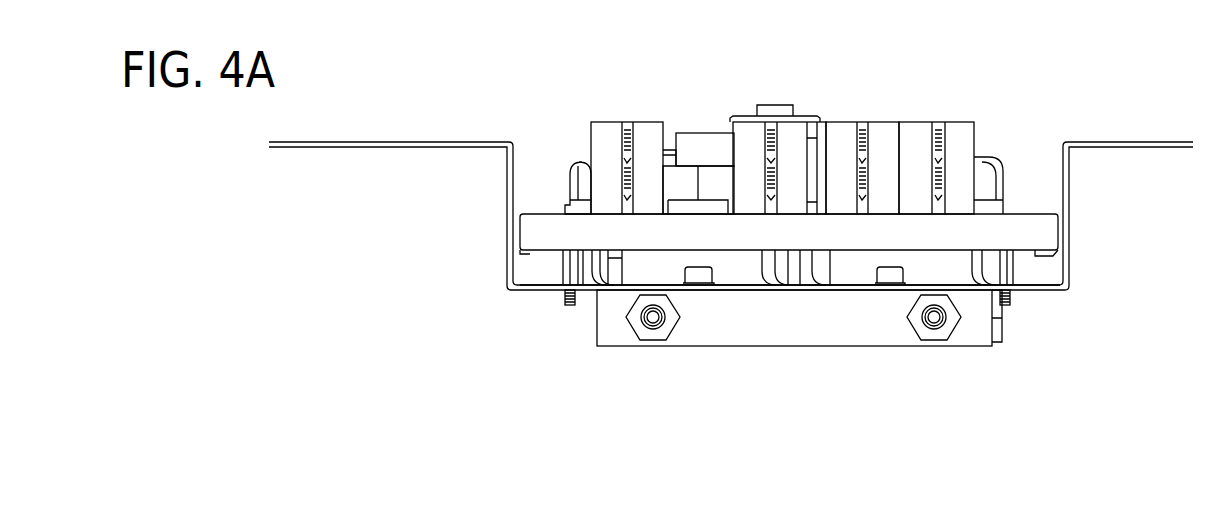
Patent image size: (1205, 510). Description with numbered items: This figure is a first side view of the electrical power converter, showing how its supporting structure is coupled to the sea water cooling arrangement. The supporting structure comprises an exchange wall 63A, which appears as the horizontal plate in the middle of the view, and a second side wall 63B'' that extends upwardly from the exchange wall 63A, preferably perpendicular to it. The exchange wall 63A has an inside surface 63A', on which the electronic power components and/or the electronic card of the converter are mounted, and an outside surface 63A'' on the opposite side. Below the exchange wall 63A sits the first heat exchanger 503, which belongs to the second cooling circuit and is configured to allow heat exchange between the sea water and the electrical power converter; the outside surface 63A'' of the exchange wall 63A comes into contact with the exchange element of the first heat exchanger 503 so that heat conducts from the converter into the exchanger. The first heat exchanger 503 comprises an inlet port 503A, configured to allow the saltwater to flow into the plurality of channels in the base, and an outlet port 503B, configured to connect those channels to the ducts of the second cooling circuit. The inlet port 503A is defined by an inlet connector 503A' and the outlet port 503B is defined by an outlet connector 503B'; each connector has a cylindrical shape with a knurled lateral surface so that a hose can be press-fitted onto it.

The exchange wall 63A is at (789, 268).
The inside surface 63A' is at (746, 328).
The outside surface 63A'' is at (769, 354).
The second side wall 63B'' is at (731, 216).
The first heat exchanger 503 is at (812, 320).
The inlet port 503A is at (930, 367).
The inlet connector 503A' is at (979, 357).
The outlet port 503B is at (640, 369).
The outlet connector 503B' is at (686, 391).